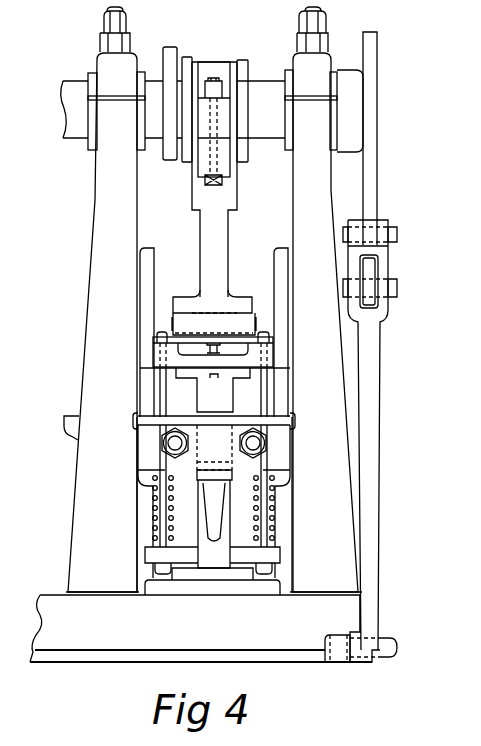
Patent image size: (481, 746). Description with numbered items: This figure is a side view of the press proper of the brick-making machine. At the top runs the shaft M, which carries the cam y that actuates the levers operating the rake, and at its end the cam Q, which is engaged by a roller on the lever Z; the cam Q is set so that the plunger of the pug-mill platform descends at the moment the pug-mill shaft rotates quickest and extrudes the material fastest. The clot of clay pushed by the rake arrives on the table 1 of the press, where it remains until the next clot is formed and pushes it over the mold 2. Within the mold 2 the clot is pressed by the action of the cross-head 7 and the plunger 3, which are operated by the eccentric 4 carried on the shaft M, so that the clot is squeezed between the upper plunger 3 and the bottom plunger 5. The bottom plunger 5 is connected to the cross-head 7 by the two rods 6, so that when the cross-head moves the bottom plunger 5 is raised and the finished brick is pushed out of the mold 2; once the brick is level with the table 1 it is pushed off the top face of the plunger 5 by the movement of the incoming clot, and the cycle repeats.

The cam y is at (170, 148).
The eccentric 4 is at (226, 172).
The shaft M is at (261, 109).
The cam Q is at (357, 122).
The lever Z is at (374, 353).
The cross-head 7 is at (214, 313).
The rods 6 is at (162, 393).
The plunger 3 is at (215, 390).
The mold 2 is at (214, 486).
The table 1 is at (255, 420).
The bottom plunger 5 is at (214, 519).